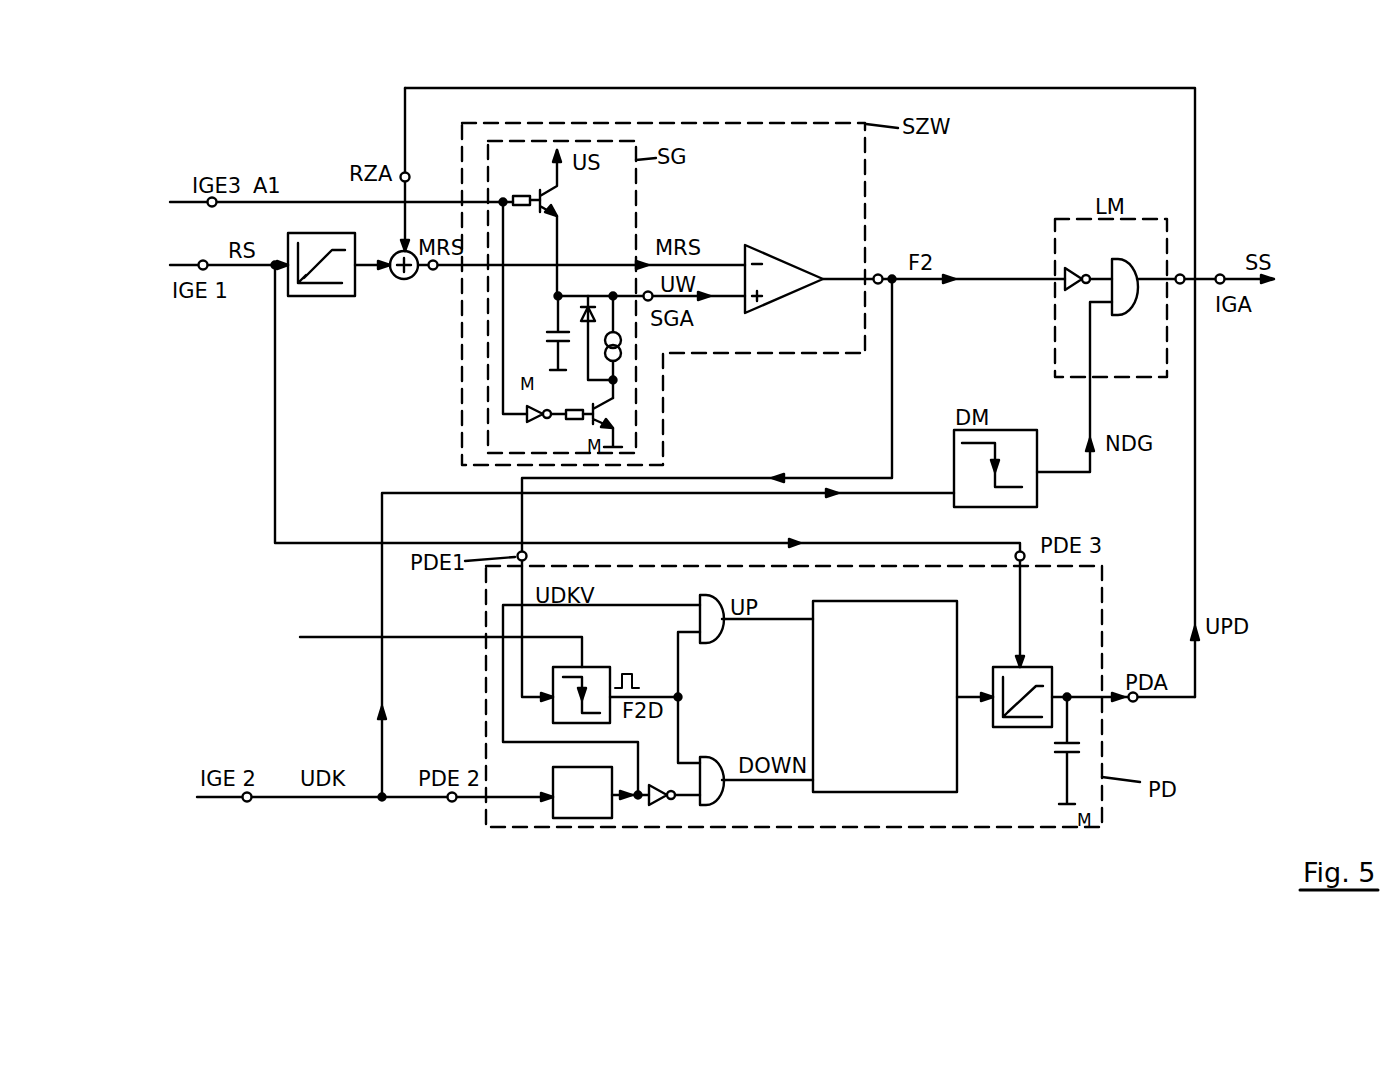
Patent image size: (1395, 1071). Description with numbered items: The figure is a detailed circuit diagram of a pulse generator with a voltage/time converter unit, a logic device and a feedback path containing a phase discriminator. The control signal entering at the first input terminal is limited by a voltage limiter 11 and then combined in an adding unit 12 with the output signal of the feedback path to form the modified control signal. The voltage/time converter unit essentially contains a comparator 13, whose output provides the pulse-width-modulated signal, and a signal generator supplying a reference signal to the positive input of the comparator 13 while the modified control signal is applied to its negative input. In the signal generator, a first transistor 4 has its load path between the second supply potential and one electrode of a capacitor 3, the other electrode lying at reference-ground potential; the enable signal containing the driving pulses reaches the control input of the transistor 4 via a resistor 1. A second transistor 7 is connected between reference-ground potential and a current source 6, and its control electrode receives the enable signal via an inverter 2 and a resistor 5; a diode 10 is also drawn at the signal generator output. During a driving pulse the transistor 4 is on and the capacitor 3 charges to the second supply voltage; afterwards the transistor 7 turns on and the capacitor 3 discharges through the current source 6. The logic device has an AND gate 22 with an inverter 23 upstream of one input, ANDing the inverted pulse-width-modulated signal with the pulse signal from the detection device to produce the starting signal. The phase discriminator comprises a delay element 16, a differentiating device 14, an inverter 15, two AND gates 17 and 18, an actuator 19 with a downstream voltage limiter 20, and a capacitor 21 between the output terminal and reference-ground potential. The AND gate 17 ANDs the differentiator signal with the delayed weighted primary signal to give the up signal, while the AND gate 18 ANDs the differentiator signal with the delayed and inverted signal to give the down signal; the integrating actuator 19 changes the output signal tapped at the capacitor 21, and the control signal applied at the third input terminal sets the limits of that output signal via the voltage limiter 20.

The resistor 1 is at (522, 196).
The inverter 2 is at (522, 416).
The capacitor 3 is at (545, 340).
The first transistor 4 is at (557, 200).
The resistor 5 is at (575, 420).
The current source 6 is at (636, 343).
The second transistor 7 is at (615, 412).
The diode 10 is at (588, 307).
The voltage limiter 11 is at (325, 296).
The adding unit 12 is at (404, 279).
The comparator 13 is at (791, 262).
The differentiating device 14 is at (300, 637).
The inverter 15 is at (660, 805).
The delay element 16 is at (585, 818).
The AND gate 17 is at (722, 630).
The AND gate 18 is at (713, 805).
The actuator 19 is at (878, 792).
The voltage limiter 20 is at (1002, 727).
The capacitor 21 is at (1060, 763).
The AND gate 22 is at (1137, 259).
The inverter 23 is at (1075, 268).